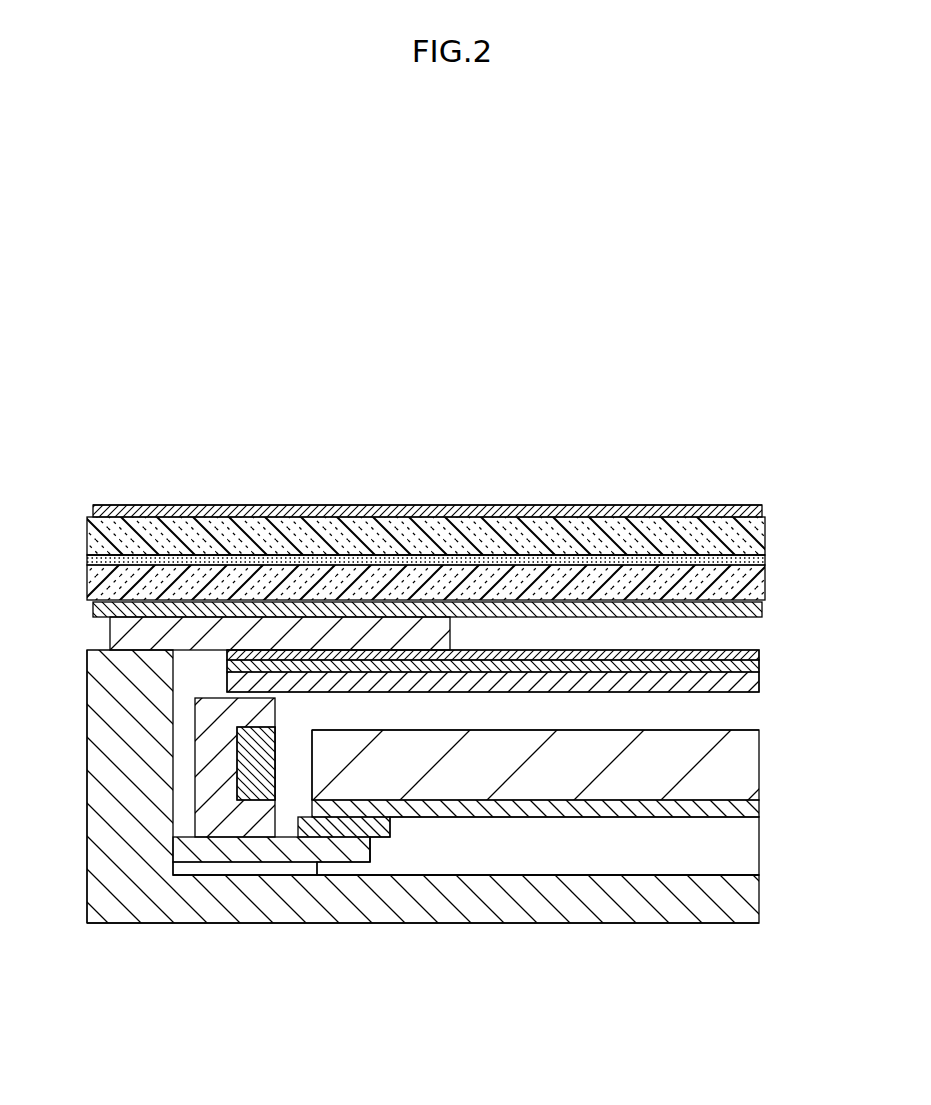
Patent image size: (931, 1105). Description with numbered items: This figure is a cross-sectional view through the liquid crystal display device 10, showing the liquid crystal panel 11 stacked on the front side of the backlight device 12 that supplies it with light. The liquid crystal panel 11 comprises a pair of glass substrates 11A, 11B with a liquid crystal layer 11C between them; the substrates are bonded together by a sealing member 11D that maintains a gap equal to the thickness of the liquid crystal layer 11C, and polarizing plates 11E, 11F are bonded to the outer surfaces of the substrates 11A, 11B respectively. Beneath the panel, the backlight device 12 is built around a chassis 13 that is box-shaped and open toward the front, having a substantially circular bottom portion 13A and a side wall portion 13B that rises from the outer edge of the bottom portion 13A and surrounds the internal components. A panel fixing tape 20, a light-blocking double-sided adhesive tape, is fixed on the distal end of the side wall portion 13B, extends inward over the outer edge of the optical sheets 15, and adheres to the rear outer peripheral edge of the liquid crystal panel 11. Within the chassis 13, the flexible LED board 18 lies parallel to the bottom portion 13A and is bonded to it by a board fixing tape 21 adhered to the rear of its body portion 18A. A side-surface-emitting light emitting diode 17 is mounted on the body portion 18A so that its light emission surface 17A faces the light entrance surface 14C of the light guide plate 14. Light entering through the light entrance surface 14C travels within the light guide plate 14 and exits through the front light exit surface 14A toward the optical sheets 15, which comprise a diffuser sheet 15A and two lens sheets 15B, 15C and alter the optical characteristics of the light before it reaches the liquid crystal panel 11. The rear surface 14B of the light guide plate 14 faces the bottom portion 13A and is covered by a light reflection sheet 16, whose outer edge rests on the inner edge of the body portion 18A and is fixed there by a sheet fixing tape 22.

The liquid crystal display device 10 is at (716, 981).
The liquid crystal panel 11 is at (594, 491).
The glass substrate 11A is at (730, 535).
The glass substrate 11B is at (738, 582).
The liquid crystal layer 11C is at (531, 560).
The sealing member 11D is at (180, 557).
The polarizing plate 11E is at (727, 515).
The polarizing plate 11F is at (738, 610).
The backlight device 12 is at (454, 934).
The chassis 13 is at (518, 923).
The bottom portion 13A is at (596, 910).
The side wall portion 13B is at (102, 776).
The light guide plate 14 is at (742, 770).
The light exit surface 14A is at (698, 727).
The rear surface 14B is at (698, 802).
The light entrance surface 14C is at (312, 748).
The optical sheets 15 is at (839, 619).
The diffuser sheet 15A is at (740, 683).
The lens sheet 15B is at (738, 667).
The lens sheet 15C is at (738, 655).
The light reflection sheet 16 is at (760, 808).
The light emitting diode 17 is at (215, 750).
The light emission surface 17A is at (278, 736).
The LED board 18 is at (213, 850).
The body portion 18A is at (352, 848).
The panel fixing tape 20 is at (132, 637).
The board fixing tape 21 is at (258, 868).
The sheet fixing tape 22 is at (372, 826).